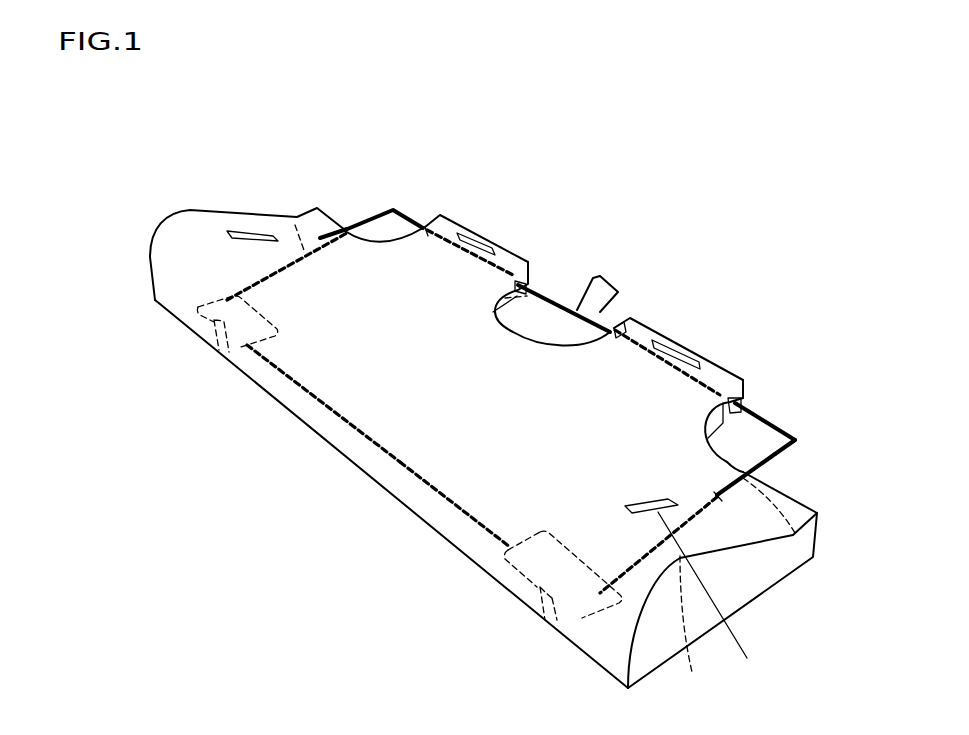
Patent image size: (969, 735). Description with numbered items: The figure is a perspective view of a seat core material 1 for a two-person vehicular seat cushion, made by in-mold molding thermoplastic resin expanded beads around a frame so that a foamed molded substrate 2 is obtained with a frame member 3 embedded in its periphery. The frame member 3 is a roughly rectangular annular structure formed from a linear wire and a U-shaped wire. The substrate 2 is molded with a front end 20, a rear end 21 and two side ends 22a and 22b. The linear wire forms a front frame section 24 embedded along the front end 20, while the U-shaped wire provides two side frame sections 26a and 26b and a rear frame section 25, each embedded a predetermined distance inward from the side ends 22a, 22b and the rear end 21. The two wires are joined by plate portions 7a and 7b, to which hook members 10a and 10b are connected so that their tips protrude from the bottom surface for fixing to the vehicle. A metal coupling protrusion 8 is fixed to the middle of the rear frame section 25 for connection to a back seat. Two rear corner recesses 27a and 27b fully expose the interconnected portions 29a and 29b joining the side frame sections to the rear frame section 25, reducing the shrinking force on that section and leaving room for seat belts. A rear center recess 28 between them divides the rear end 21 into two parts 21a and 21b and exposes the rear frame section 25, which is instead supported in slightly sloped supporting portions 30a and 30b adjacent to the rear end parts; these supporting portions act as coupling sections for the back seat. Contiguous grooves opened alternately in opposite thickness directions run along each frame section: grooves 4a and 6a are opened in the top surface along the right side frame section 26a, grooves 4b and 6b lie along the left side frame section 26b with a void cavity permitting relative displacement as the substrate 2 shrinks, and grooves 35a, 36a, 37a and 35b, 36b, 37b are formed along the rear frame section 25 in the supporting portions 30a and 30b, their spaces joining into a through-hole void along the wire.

The seat core material 1 is at (287, 413).
The foamed molded substrate 2 is at (397, 437).
The frame member 3 is at (783, 457).
The coupling protrusion 8 is at (603, 277).
The front end 20 is at (393, 488).
The rear end 21 is at (737, 373).
The rear end part 21a is at (705, 358).
The rear end part 21b is at (507, 243).
The side end 22a is at (740, 587).
The side end 22b is at (174, 217).
The front frame section 24 is at (467, 523).
The rear frame section 25 is at (790, 440).
The side frame section 26a is at (692, 672).
The side frame section 26b is at (295, 225).
The rear corner recess 27a is at (707, 440).
The rear corner recess 27b is at (390, 239).
The rear center recess 28 is at (537, 292).
The interconnected portion 29a is at (797, 447).
The interconnected portion 29b is at (393, 214).
The supporting portion 30a is at (640, 333).
The supporting portion 30b is at (448, 230).
The groove 35a is at (740, 403).
The groove 35b is at (422, 230).
The groove 36a is at (672, 345).
The groove 36b is at (477, 233).
The groove 37a is at (613, 320).
The groove 37b is at (527, 283).
The groove 4a is at (694, 590).
The groove 4b is at (245, 231).
The groove 6a is at (793, 535).
The groove 6b is at (335, 237).
The plate portion 7a is at (573, 623).
The plate portion 7b is at (203, 322).
The hook member 10a is at (543, 622).
The hook member 10b is at (213, 352).